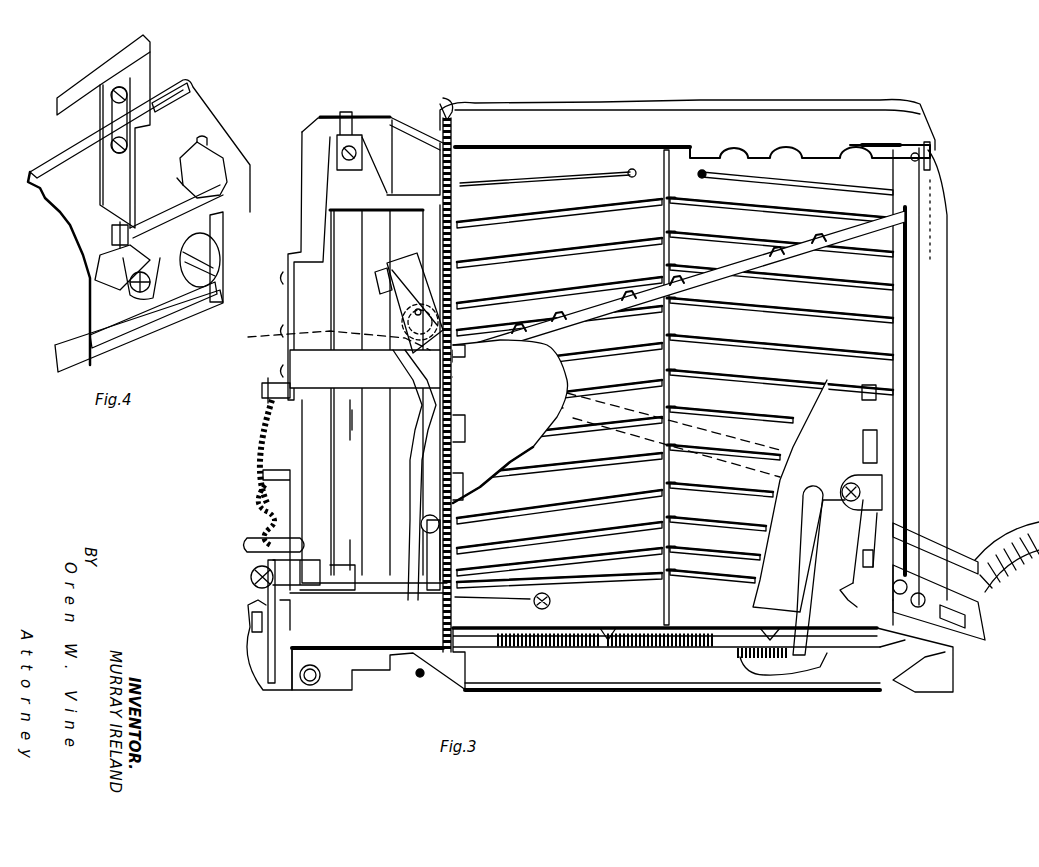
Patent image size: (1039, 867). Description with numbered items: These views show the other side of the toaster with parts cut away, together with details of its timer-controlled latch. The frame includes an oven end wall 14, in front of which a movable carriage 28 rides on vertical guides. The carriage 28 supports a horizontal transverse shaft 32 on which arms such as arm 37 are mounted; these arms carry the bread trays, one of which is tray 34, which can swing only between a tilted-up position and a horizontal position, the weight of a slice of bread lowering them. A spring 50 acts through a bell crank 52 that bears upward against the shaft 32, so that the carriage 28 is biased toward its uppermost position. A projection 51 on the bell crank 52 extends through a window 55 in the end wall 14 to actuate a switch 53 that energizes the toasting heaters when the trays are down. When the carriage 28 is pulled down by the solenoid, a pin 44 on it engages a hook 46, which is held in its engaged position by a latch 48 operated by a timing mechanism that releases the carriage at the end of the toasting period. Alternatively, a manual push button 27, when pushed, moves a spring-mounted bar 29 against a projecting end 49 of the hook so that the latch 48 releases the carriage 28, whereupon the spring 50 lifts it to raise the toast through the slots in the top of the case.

In FIG. 3, the oven end wall 14 is at (920, 348).
In FIG. 4, the manual push button 27 is at (220, 288).
In FIG. 3, the movable carriage 28 is at (335, 192).
In FIG. 4, the movable carriage 28 is at (142, 75).
In FIG. 3, the spring-mounted bar 29 is at (266, 628).
In FIG. 4, the spring-mounted bar 29 is at (200, 308).
In FIG. 3, the transverse shaft 32 is at (501, 403).
In FIG. 3, the bread tray 34 is at (908, 220).
In FIG. 3, the arm 37 is at (410, 275).
In FIG. 3, the pin 44 is at (272, 400).
In FIG. 4, the pin 44 is at (120, 235).
In FIG. 3, the hook 46 is at (247, 545).
In FIG. 4, the hook 46 is at (107, 252).
In FIG. 3, the latch 48 is at (252, 573).
In FIG. 4, the latch 48 is at (202, 118).
In FIG. 4, the projecting end 49 is at (220, 188).
In FIG. 3, the spring 50 is at (752, 673).
In FIG. 3, the projection 51 is at (853, 600).
In FIG. 3, the bell crank 52 is at (810, 470).
In FIG. 3, the switch 53 is at (917, 590).
In FIG. 3, the window 55 is at (887, 610).